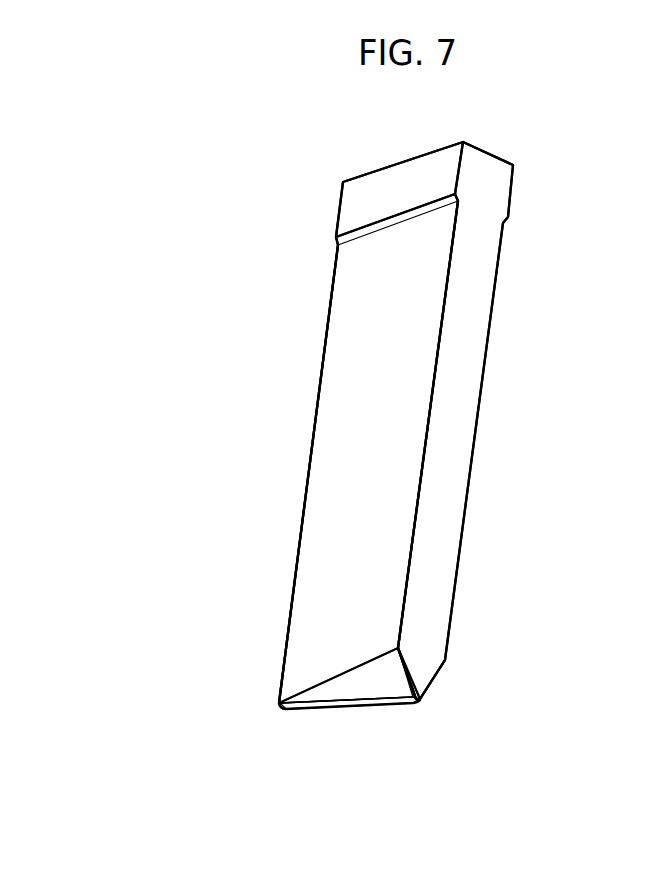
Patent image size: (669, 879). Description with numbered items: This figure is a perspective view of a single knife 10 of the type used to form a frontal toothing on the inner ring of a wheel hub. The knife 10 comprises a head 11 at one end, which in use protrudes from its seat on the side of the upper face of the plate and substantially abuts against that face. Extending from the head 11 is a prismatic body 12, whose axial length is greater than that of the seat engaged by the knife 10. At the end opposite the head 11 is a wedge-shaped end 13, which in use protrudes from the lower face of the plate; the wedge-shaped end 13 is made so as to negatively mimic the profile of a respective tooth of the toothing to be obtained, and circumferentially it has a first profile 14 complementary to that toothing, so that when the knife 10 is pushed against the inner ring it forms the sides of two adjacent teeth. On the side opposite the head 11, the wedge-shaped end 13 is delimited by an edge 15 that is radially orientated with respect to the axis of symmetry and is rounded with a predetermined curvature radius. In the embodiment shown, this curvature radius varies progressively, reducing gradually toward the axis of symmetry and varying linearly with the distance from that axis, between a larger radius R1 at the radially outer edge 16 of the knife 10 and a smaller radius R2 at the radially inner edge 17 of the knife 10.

The knife 10 is at (583, 141).
The head 11 is at (353, 210).
The prismatic body 12 is at (342, 380).
The wedge-shaped end 13 is at (420, 701).
The first profile 14 is at (354, 685).
The edge 15 is at (390, 684).
The radially outer edge 16 is at (465, 315).
The radially inner edge 17 is at (311, 447).
The radius R1 is at (418, 695).
The radius R2 is at (280, 712).